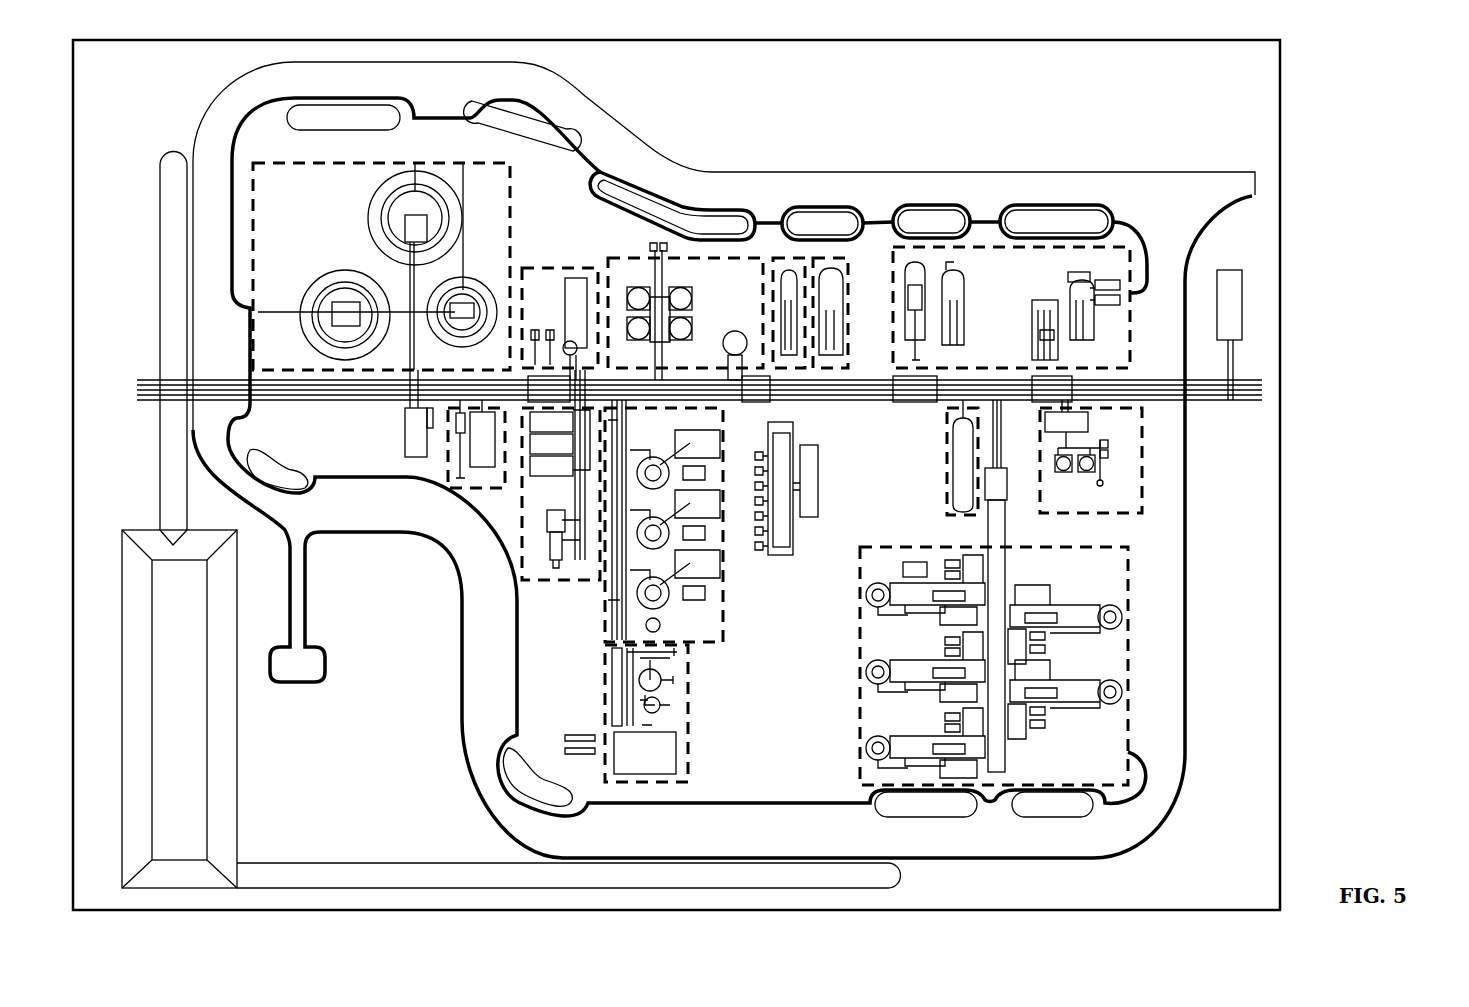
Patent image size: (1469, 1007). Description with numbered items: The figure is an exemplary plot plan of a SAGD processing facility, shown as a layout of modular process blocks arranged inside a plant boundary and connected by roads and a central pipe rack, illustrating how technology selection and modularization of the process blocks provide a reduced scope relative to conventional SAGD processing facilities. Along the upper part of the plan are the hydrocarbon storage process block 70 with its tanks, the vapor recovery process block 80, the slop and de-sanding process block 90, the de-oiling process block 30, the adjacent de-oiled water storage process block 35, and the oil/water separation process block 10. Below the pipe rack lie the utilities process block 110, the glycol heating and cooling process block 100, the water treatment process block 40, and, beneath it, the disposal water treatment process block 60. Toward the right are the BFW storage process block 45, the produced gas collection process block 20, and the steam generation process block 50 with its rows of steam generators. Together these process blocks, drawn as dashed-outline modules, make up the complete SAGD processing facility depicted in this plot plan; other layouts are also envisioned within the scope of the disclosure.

The oil/water separation process block 10 is at (1100, 247).
The produced gas collection process block 20 is at (1142, 460).
The de-oiling process block 30 is at (800, 258).
The de-oiled water storage process block 35 is at (843, 258).
The water treatment process block 40 is at (723, 562).
The BFW storage process block 45 is at (947, 462).
The steam generation process block 50 is at (1130, 653).
The disposal water treatment process block 60 is at (688, 675).
The hydrocarbon storage process block 70 is at (253, 191).
The vapor recovery process block 80 is at (558, 268).
The slop and de-sanding process block 90 is at (722, 258).
The glycol heating and cooling process block 100 is at (560, 580).
The utilities process block 110 is at (477, 490).